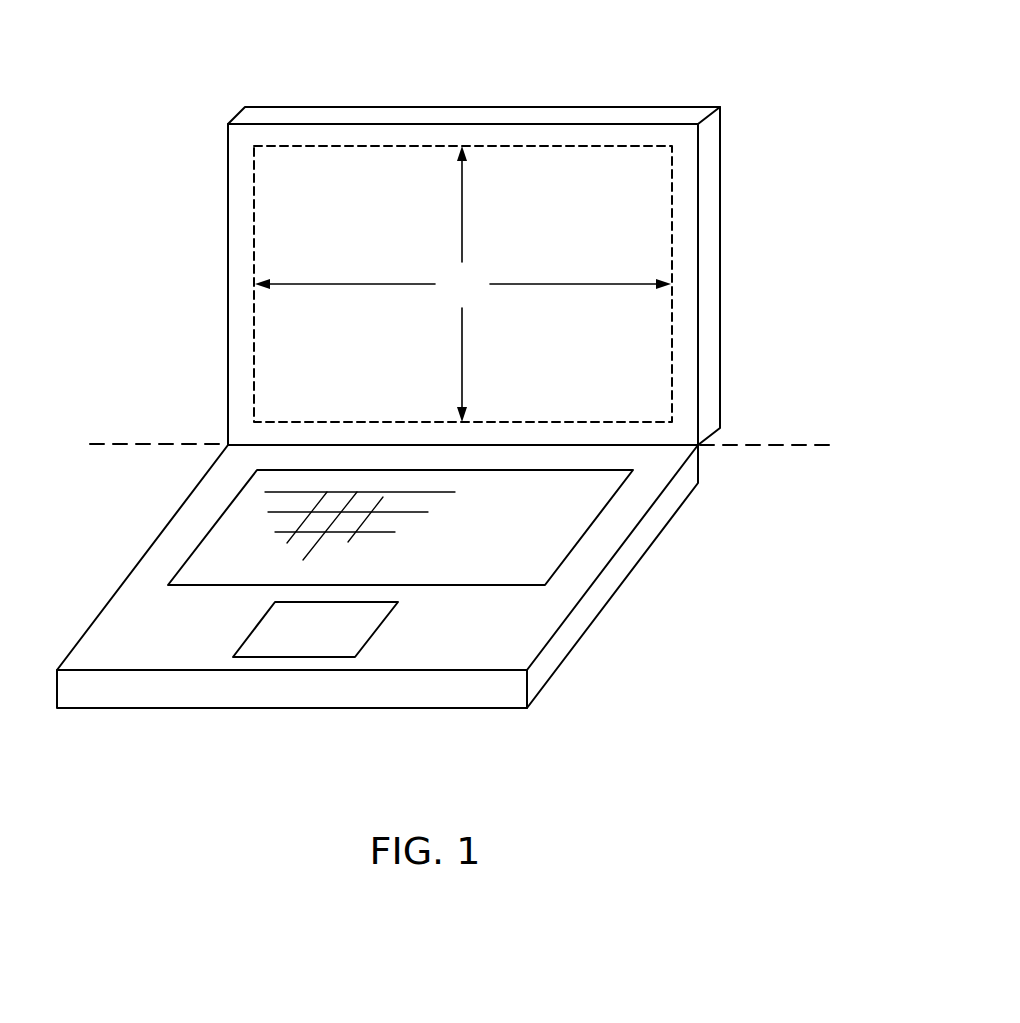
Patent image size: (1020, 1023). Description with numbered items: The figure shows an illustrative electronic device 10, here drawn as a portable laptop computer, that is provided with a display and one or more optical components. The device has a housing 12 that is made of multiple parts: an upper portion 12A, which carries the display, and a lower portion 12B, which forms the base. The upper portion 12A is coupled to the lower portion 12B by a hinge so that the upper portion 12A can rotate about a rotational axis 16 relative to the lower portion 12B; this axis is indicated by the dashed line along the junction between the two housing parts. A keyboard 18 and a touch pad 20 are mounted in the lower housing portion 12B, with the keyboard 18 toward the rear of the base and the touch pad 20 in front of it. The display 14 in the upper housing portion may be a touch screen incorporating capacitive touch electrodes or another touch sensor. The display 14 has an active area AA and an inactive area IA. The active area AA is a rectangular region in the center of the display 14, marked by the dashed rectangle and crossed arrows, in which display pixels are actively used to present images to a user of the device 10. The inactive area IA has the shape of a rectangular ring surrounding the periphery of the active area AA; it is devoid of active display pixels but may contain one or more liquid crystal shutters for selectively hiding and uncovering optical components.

The electronic device 10 is at (735, 42).
The housing 12 is at (708, 285).
The upper portion 12A is at (210, 123).
The lower portion 12B is at (212, 454).
The display 14 is at (390, 167).
The rotational axis 16 is at (124, 444).
The keyboard 18 is at (550, 538).
The touch pad 20 is at (310, 650).
The active area AA is at (463, 284).
The inactive area IA is at (612, 113).